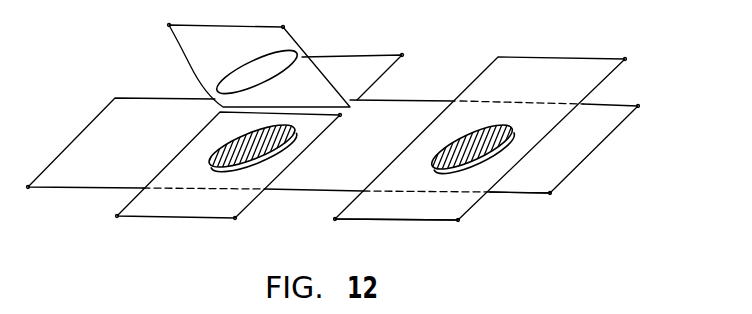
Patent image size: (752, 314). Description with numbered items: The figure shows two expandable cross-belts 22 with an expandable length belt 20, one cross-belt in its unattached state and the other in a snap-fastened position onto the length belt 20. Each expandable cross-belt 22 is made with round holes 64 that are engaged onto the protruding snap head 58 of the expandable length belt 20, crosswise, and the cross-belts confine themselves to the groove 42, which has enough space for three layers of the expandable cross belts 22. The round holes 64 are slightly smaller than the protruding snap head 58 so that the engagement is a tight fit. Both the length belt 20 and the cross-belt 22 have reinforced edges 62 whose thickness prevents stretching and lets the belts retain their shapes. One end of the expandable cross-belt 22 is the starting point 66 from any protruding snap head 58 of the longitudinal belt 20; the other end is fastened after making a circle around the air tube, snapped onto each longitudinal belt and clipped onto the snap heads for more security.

The expandable length belt 20 is at (595, 163).
The expandable cross-belt 22 is at (508, 134).
The groove 42 is at (513, 133).
The protruding snap head 58 is at (482, 143).
The reinforced edge 62 is at (550, 194).
The round hole 64 is at (257, 70).
The starting point 66 is at (190, 146).